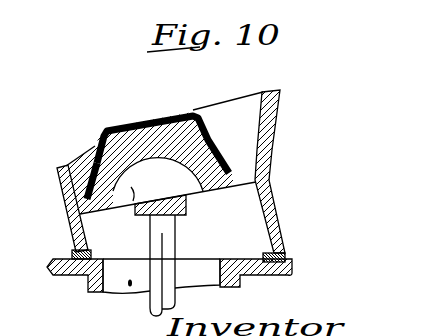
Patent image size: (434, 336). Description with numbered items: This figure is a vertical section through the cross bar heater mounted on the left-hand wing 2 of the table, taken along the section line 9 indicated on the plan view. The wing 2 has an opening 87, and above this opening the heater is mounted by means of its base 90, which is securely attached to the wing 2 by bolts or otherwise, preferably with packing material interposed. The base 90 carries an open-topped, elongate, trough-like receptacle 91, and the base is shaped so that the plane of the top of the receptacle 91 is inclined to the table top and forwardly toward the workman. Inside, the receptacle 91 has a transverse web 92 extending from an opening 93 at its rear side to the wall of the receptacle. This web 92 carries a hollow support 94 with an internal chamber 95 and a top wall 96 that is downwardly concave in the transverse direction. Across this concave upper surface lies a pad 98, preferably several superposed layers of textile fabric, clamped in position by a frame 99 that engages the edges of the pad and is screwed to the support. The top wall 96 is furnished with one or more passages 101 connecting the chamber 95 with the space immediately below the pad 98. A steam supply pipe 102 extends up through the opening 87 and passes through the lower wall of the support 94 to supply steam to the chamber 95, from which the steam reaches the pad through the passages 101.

The left-hand wing 2 is at (292, 264).
The spindle rod 9 is at (157, 168).
The opening 87 is at (116, 292).
The base 90 is at (276, 214).
The receptacle 91 is at (268, 133).
The transverse web 92 is at (92, 213).
The opening 93 is at (257, 177).
The hollow support 94 is at (210, 148).
The internal chamber 95 is at (127, 180).
The top wall 96 is at (201, 123).
The pad 98 is at (167, 115).
The frame 99 is at (97, 167).
The passages 101 is at (158, 174).
The steam supply pipe 102 is at (178, 239).